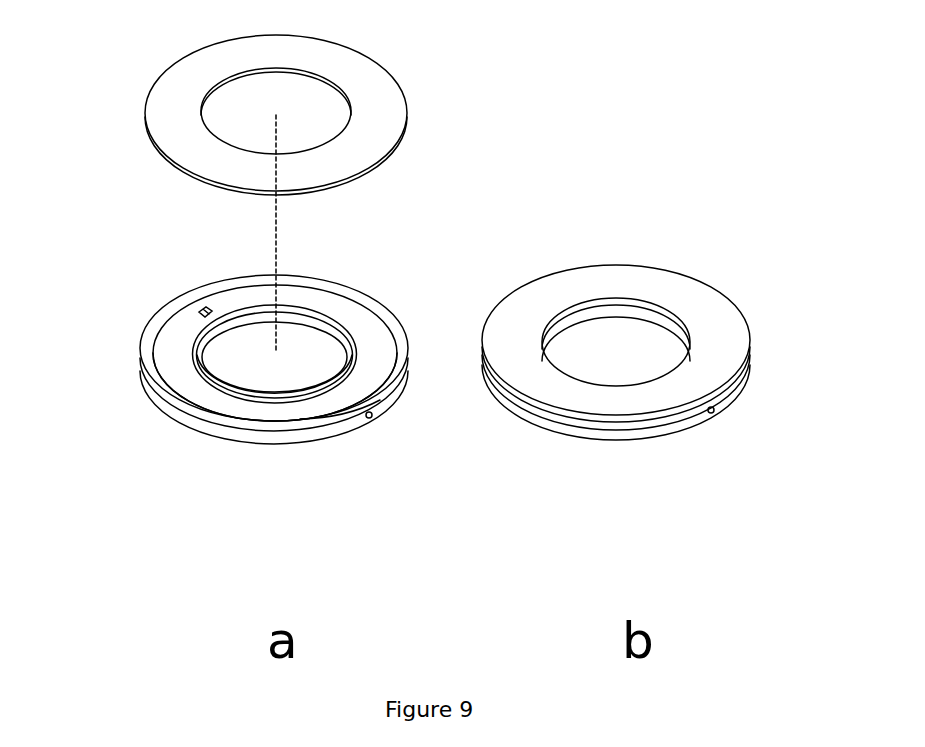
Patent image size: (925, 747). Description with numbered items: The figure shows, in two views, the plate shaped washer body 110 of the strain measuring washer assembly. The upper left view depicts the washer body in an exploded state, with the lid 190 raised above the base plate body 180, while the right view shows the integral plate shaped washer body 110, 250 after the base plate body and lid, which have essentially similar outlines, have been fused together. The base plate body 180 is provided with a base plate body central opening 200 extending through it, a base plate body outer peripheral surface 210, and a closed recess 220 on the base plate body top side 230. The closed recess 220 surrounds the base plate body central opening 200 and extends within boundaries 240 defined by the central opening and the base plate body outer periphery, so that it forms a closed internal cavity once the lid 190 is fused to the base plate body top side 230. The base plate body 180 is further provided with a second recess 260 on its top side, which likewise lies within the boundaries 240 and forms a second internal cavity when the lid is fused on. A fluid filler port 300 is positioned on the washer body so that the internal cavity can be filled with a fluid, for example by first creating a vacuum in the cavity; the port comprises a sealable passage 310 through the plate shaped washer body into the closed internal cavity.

The plate shaped washer body 110 is at (618, 443).
The base plate body 180 is at (267, 448).
The lid 190 is at (347, 60).
The base plate body central opening 200 is at (247, 348).
The base plate body outer peripheral surface 210 is at (168, 407).
The closed recess 220 is at (365, 327).
The base plate body top side 230 is at (290, 310).
The boundaries 240 is at (223, 393).
The ring 250 is at (616, 394).
The second recess 260 is at (196, 312).
The fluid filler port 300 is at (372, 414).
The sealable passage 310 is at (347, 395).